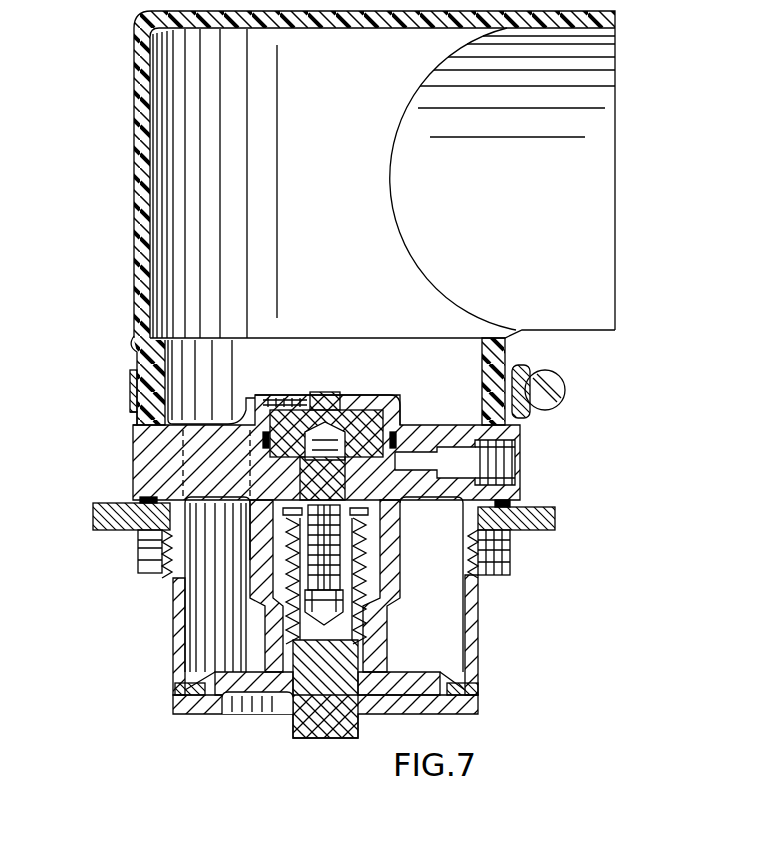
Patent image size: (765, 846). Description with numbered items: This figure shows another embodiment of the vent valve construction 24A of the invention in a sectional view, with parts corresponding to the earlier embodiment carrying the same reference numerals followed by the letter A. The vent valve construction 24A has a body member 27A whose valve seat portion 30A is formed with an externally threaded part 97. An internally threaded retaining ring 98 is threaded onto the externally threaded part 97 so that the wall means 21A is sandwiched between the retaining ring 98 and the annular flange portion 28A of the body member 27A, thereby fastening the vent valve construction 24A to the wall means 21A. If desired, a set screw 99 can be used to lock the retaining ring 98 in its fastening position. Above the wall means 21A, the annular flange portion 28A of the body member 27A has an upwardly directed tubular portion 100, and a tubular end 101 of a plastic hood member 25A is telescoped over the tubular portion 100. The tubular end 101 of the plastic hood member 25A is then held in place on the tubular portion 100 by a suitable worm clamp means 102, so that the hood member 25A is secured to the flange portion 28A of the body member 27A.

The plastic hood member 25A is at (137, 180).
The upwardly directed tubular portion 100 is at (130, 378).
The tubular end 101 is at (133, 420).
The annular flange portion 28A is at (148, 462).
The worm clamp means 102 is at (548, 362).
The wall means 21A is at (107, 515).
The internally threaded retaining ring 98 is at (140, 560).
The externally threaded part 97 is at (172, 572).
The valve seat portion 30A is at (173, 638).
The set screw 99 is at (510, 552).
The vent valve construction 24A is at (520, 598).
The body member 27A is at (478, 658).